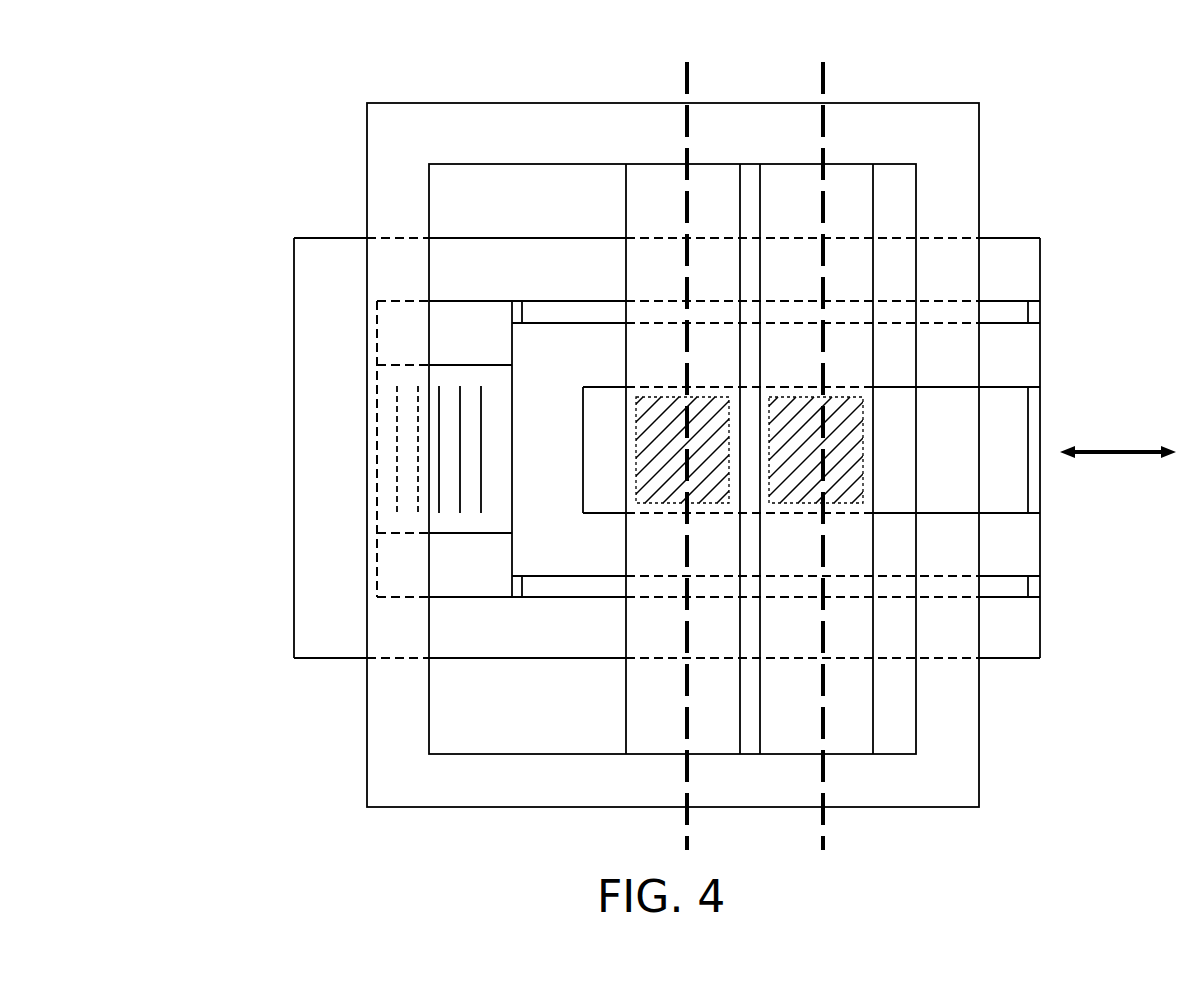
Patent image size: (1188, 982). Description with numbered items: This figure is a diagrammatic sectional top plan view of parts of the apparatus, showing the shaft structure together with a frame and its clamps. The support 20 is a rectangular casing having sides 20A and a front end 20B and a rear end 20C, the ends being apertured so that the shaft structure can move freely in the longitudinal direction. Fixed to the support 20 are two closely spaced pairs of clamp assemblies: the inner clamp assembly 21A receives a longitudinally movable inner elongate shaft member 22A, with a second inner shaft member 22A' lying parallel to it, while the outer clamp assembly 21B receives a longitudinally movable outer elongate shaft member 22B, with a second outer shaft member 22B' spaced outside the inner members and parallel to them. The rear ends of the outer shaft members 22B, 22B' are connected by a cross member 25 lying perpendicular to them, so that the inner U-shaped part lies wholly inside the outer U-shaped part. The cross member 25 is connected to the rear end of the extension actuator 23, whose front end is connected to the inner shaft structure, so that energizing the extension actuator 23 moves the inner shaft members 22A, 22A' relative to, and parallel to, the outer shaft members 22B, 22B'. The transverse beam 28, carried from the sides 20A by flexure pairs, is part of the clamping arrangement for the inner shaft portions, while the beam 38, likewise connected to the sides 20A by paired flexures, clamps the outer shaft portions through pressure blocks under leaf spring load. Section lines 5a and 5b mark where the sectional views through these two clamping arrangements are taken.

The support 20 is at (344, 152).
The sides 20A is at (503, 133).
The front end 20B is at (947, 702).
The rear end 20C is at (387, 732).
The inner clamp assembly 21A is at (837, 438).
The outer clamp assembly 21B is at (660, 473).
The inner elongate shaft member 22A is at (841, 290).
The inner elongate shaft member 22A' is at (845, 554).
The outer elongate shaft member 22B is at (841, 216).
The outer elongate shaft member 22B' is at (845, 623).
The extension actuator 23 is at (448, 471).
The cross member 25 is at (308, 355).
The transverse beam 28 is at (843, 228).
The beam 38 is at (648, 228).
The section line 5a is at (845, 850).
The section line 5b is at (710, 850).